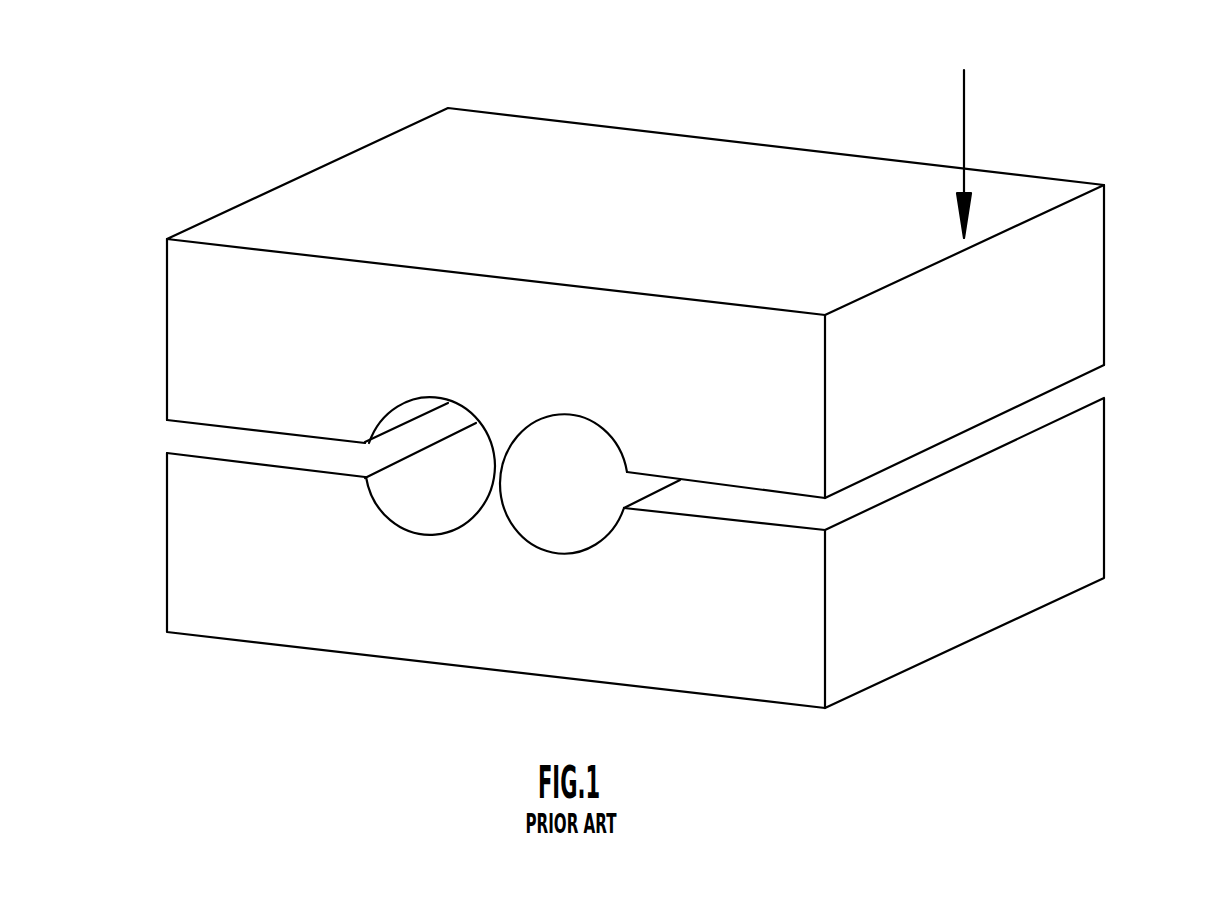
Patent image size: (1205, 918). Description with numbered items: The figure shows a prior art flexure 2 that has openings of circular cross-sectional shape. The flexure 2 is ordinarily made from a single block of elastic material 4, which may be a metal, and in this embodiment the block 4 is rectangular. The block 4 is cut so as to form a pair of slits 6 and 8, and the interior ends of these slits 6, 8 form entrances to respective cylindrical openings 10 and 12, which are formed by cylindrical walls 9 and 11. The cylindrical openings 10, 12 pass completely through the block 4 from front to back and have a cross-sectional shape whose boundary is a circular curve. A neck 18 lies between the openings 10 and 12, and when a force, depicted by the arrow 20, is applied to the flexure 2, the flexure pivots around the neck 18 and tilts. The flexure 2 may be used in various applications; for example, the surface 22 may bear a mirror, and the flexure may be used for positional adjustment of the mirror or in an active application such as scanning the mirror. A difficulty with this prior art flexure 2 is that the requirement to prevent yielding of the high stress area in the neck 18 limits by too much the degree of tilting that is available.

The flexure 2 is at (849, 101).
The block of elastic material 4 is at (1087, 287).
The slit 6 is at (1070, 405).
The slit 8 is at (210, 448).
The cylindrical wall 9 is at (609, 445).
The cylindrical opening 10 is at (570, 523).
The cylindrical wall 11 is at (399, 414).
The cylindrical opening 12 is at (401, 497).
The neck 18 is at (497, 468).
The arrow 20 is at (965, 130).
The surface 22 is at (541, 137).